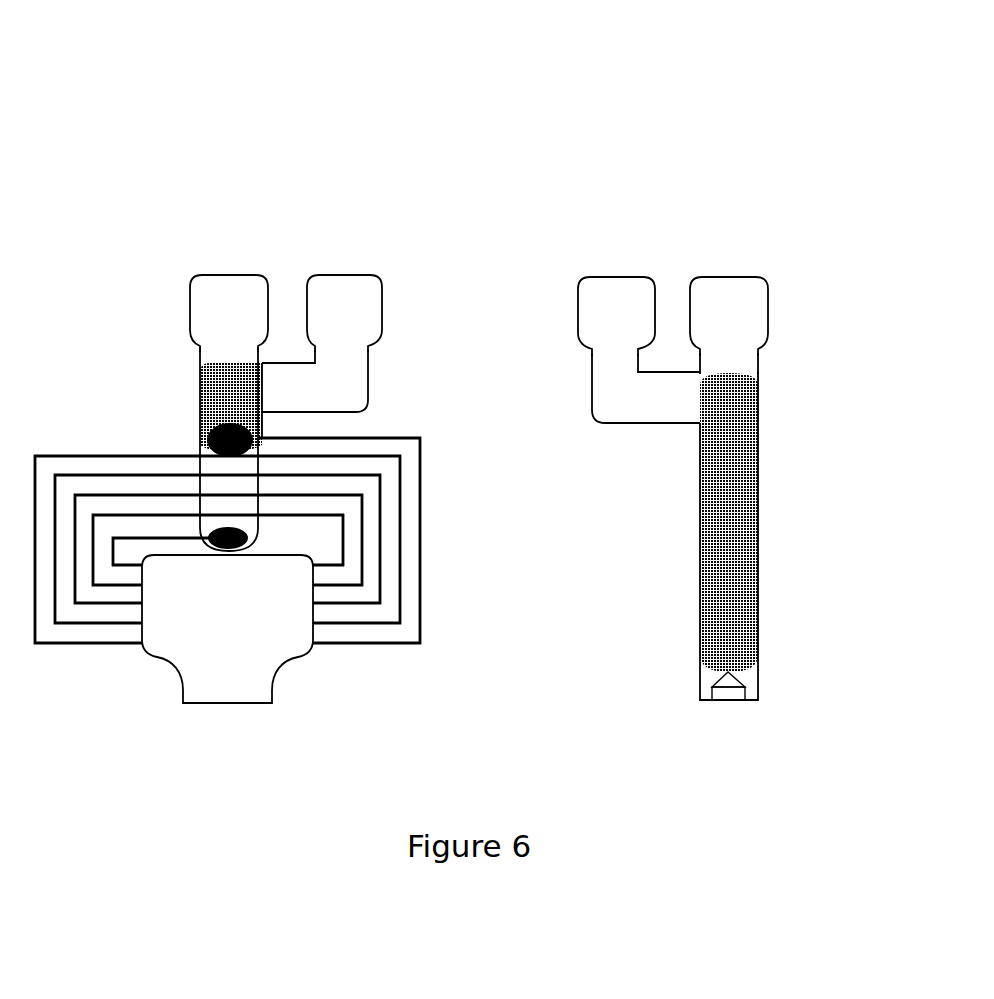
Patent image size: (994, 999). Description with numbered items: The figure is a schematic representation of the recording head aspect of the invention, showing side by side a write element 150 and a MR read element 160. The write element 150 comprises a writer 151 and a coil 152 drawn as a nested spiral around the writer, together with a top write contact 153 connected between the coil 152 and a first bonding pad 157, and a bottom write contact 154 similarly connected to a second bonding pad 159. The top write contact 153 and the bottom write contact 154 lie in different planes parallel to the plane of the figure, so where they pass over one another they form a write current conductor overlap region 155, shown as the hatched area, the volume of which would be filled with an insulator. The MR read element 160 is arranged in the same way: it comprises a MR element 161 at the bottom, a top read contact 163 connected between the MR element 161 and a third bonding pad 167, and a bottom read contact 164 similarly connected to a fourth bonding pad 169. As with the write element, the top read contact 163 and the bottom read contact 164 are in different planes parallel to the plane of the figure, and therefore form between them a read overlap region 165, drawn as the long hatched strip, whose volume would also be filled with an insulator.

The write element 150 is at (307, 170).
The writer 151 is at (270, 703).
The coil 152 is at (420, 643).
The top write contact 153 is at (343, 393).
The bottom write contact 154 is at (218, 462).
The write current conductor overlap region 155 is at (202, 382).
The first bonding pad 157 is at (345, 297).
The second bonding pad 159 is at (220, 297).
The MR read element 160 is at (808, 183).
The MR element 161 is at (727, 693).
The top read contact 163 is at (612, 392).
The bottom read contact 164 is at (737, 360).
The read overlap region 165 is at (752, 535).
The third bonding pad 167 is at (622, 298).
The fourth bonding pad 169 is at (747, 298).